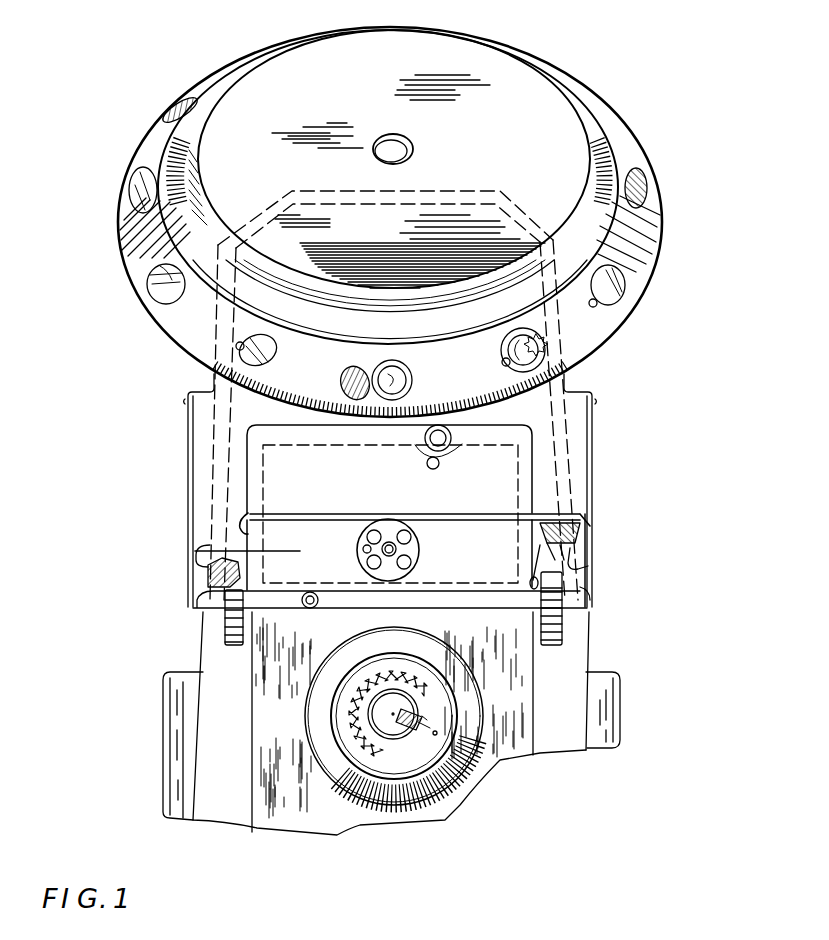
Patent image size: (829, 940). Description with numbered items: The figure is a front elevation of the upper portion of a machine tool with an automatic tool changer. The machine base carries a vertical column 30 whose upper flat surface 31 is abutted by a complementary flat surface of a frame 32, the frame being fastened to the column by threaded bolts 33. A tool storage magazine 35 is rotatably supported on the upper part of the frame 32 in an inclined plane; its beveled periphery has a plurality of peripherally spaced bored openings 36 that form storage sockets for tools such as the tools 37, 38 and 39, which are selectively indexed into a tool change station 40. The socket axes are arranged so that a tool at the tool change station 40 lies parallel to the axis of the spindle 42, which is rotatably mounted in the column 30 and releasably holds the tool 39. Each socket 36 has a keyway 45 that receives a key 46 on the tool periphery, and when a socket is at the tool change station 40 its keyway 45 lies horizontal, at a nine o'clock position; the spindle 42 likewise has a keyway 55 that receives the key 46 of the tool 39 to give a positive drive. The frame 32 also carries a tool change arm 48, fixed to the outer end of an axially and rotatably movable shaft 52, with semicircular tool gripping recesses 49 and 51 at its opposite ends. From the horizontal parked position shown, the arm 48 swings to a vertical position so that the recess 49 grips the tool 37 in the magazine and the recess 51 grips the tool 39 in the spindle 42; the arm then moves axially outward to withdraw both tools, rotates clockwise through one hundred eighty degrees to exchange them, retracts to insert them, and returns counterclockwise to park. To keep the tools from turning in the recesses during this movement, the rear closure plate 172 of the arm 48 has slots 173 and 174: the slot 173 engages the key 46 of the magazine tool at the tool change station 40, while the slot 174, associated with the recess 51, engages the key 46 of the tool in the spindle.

The vertical column 30 is at (229, 818).
The upper flat surface 31 is at (196, 598).
The frame 32 is at (192, 500).
The threaded bolts 33 is at (225, 633).
The tool storage magazine 35 is at (157, 253).
The bored openings 36 is at (165, 285).
The tool 37 is at (397, 378).
The tool 38 is at (545, 348).
The tool 39 is at (386, 738).
The tool change station 40 is at (378, 446).
The spindle 42 is at (437, 735).
The keyway 45 is at (240, 348).
The key 46 is at (504, 366).
The tool change arm 48 is at (284, 544).
The tool gripping recess 49 is at (210, 565).
The tool gripping recess 51 is at (588, 563).
The shaft 52 is at (413, 557).
The keyway 55 is at (425, 738).
The rear closure plate 172 is at (580, 541).
The slot 173 is at (196, 578).
The slot 174 is at (585, 517).